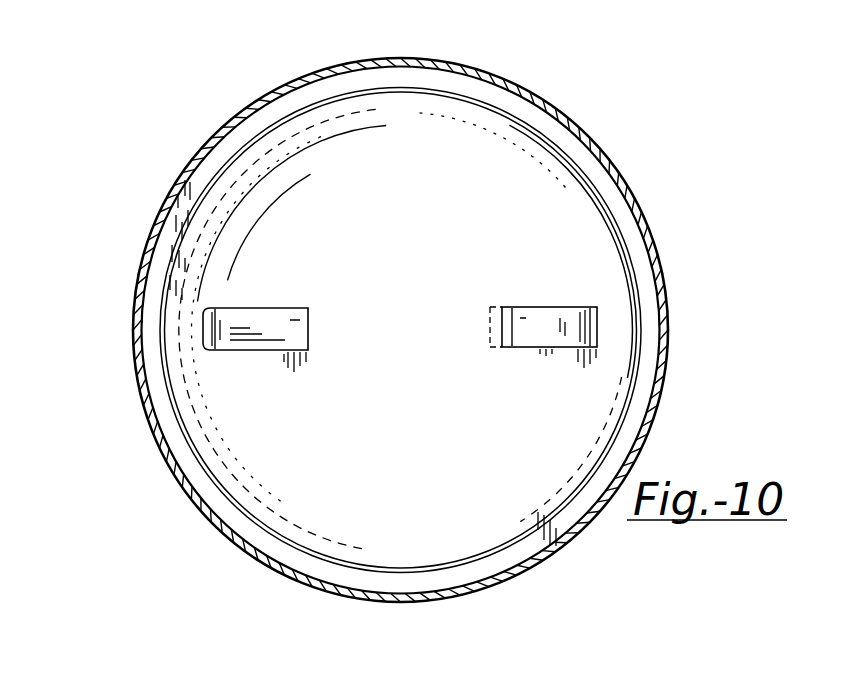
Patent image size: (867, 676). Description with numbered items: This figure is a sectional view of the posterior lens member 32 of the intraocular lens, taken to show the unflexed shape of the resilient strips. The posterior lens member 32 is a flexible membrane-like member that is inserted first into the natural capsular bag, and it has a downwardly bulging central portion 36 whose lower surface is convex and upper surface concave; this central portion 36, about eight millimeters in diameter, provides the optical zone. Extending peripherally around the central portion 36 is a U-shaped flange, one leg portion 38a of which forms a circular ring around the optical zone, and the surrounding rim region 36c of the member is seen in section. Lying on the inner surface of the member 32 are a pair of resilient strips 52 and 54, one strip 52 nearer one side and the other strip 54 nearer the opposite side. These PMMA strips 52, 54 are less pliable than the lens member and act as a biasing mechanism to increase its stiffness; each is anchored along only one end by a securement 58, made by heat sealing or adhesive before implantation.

The posterior lens member 32 is at (165, 482).
The rim band 36c is at (170, 192).
The leg portion 38a is at (583, 162).
The central portion 36 is at (497, 419).
The resilient strip 52 is at (275, 351).
The resilient strip 54 is at (520, 307).
The securement 58 is at (208, 310).